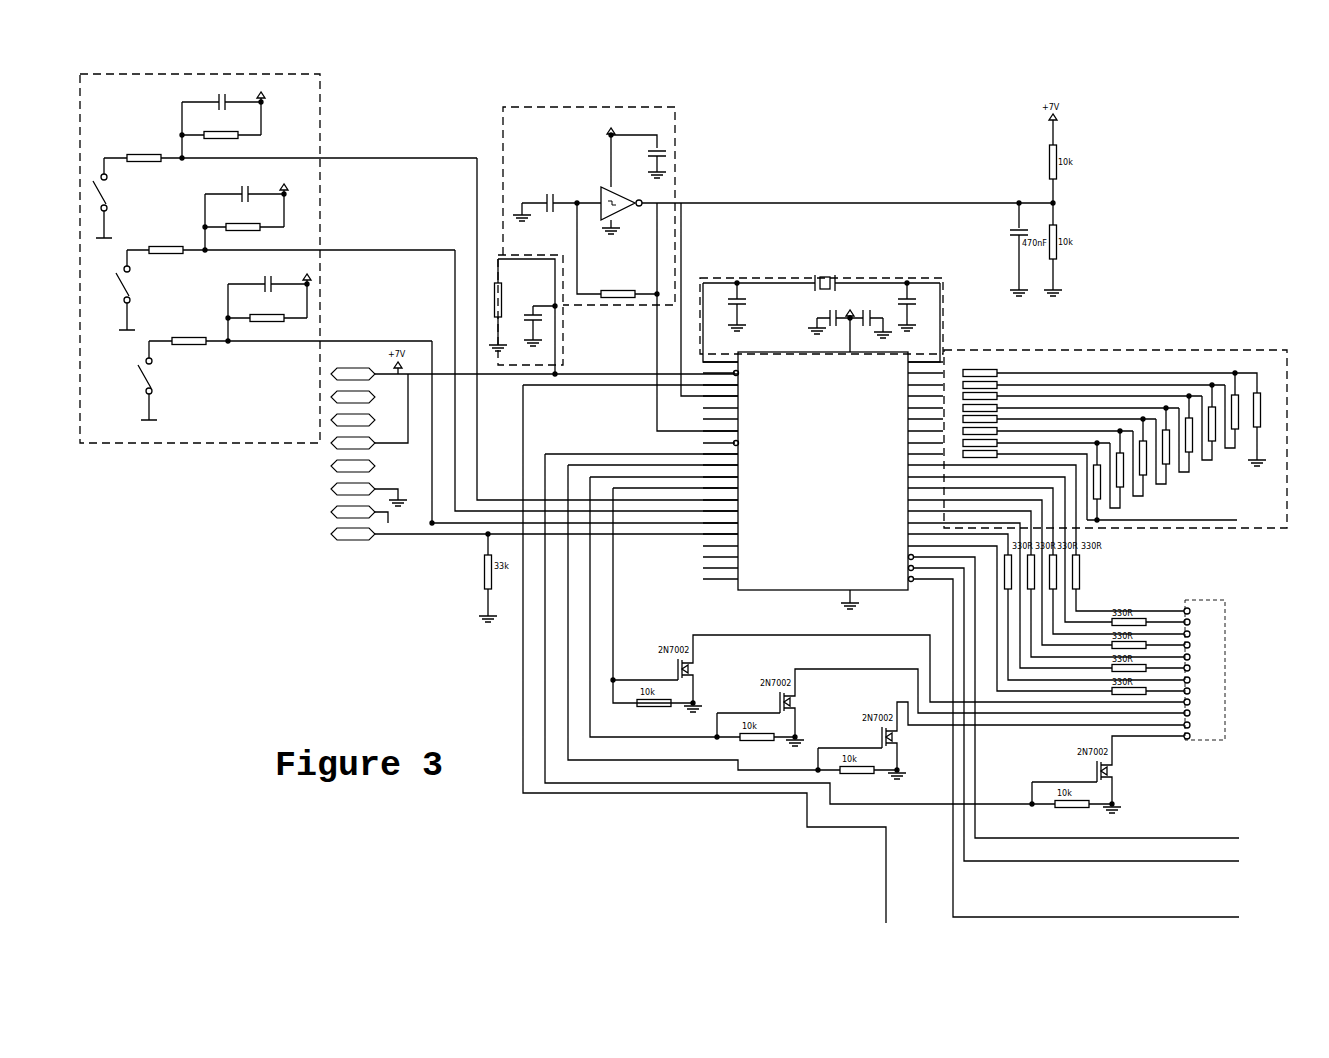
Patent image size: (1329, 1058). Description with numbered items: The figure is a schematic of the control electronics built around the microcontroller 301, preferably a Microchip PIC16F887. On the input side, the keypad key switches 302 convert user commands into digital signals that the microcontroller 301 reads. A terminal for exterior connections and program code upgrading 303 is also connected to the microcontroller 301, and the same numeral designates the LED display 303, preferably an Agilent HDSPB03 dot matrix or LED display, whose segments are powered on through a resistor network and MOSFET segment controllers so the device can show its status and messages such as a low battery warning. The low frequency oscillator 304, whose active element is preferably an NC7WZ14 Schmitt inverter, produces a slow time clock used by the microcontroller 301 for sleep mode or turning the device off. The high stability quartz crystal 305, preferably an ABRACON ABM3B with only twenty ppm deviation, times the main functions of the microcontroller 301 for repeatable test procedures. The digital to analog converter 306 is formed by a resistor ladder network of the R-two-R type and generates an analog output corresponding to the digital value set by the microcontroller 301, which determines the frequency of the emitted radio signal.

The microcontroller 301 is at (778, 580).
The keypad key switches 302 is at (216, 393).
The terminal for exterior connections and program code upgrading / display 303 is at (362, 546).
The low frequency oscillator 304 is at (656, 118).
The high stability quartz crystal 305 is at (812, 276).
The digital to analog converter 306 is at (1197, 358).